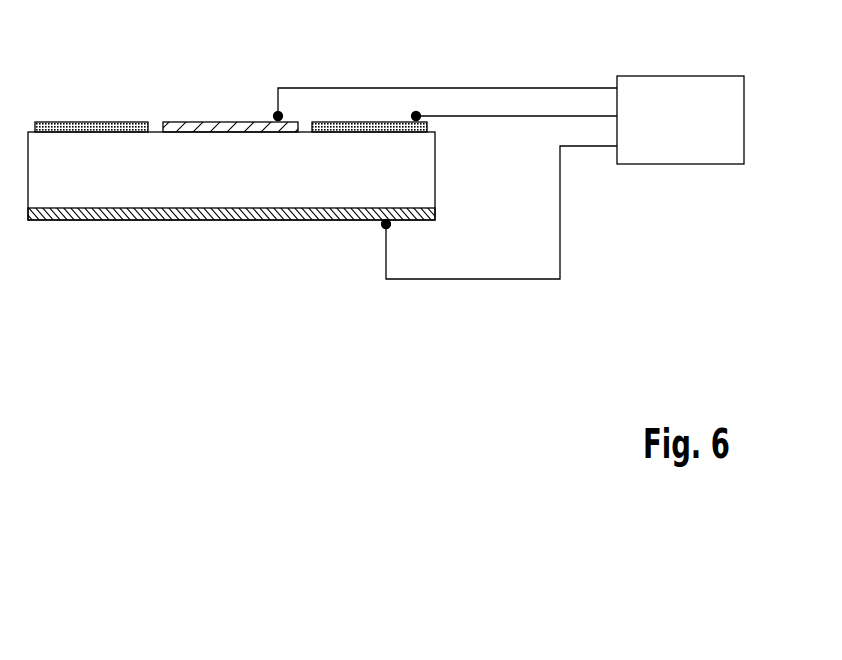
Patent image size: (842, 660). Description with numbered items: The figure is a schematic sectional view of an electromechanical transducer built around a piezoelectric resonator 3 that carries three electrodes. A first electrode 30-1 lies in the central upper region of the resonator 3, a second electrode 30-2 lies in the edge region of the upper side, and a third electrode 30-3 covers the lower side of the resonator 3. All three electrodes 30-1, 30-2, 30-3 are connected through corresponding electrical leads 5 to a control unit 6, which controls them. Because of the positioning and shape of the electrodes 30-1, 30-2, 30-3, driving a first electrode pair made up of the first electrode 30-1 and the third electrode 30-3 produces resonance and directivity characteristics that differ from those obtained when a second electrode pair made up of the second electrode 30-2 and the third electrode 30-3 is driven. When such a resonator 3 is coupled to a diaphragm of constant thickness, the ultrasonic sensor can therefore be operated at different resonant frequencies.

The piezoelectric resonator 3 is at (157, 70).
The first electrode 30-1 is at (217, 128).
The second electrode 30-2 is at (85, 128).
The third electrode 30-3 is at (228, 213).
The electrical leads 5 is at (590, 146).
The control unit 6 is at (683, 148).